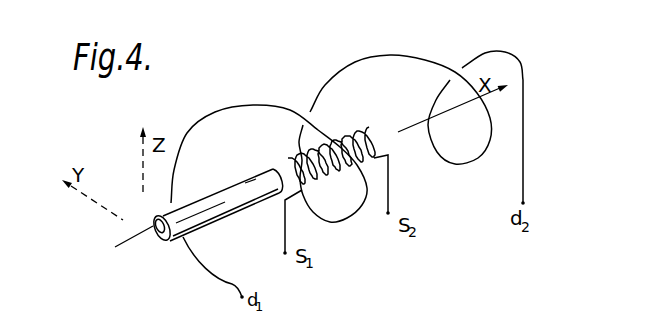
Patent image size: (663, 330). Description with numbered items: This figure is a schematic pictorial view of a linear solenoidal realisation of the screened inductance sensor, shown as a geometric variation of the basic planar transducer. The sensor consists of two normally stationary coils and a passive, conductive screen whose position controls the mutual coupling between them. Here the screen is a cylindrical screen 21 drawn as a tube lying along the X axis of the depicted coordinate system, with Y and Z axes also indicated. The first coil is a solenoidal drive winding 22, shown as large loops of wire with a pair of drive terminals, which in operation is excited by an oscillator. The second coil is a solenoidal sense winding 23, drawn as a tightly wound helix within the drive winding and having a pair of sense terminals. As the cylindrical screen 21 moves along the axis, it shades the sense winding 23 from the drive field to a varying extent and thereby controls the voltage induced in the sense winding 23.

The cylindrical screen 21 is at (208, 202).
The solenoidal drive winding 22 is at (311, 111).
The solenoidal sense winding 23 is at (373, 137).